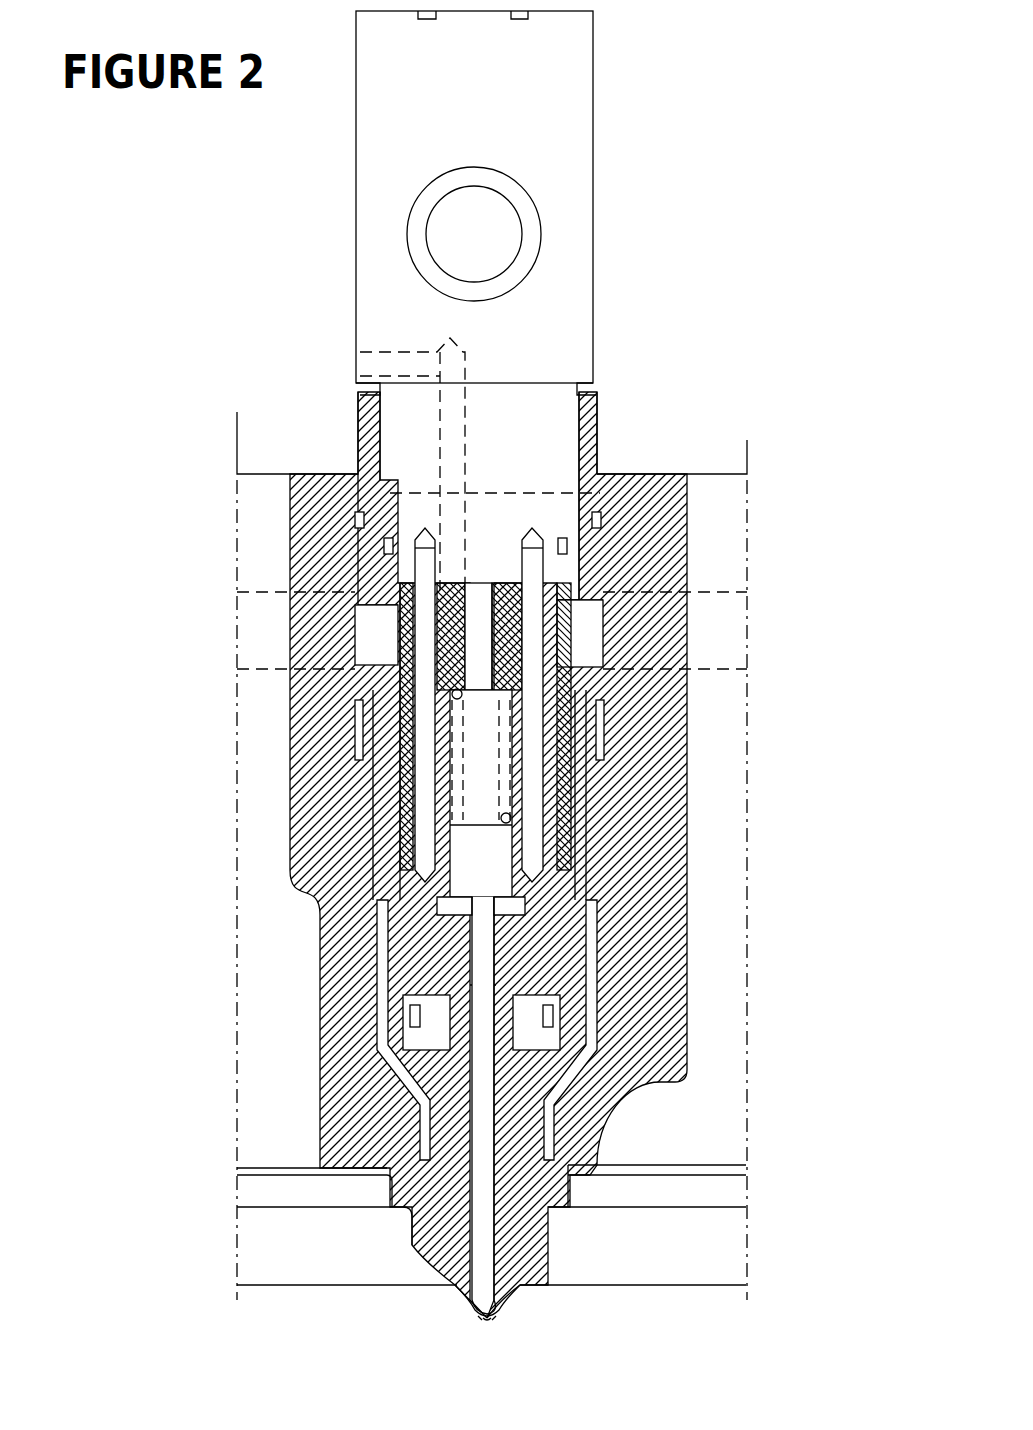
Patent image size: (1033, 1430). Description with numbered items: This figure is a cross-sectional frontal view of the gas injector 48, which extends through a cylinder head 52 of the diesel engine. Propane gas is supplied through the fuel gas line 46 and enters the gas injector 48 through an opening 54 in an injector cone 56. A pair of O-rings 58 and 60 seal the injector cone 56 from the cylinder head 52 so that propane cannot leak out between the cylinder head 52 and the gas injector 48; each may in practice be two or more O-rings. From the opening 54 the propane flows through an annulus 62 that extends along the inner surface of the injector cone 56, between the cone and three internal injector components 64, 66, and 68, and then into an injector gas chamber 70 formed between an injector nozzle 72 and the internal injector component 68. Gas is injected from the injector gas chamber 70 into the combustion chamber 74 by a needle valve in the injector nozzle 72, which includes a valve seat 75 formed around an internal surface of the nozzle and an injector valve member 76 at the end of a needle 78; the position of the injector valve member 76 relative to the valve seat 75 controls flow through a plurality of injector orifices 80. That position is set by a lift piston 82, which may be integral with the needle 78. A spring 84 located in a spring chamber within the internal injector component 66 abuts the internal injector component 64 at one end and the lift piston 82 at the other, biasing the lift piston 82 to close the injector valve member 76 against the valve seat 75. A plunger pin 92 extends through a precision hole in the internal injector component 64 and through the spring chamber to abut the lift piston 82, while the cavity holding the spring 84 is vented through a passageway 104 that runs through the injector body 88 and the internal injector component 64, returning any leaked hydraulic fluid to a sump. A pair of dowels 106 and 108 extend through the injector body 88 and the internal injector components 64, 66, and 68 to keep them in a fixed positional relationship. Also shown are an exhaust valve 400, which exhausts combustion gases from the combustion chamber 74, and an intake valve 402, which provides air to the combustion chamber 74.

The fuel gas line 46 is at (258, 612).
The gas injector 48 is at (706, 108).
The cylinder head 52 is at (722, 515).
The opening 54 is at (375, 612).
The injector cone 56 is at (357, 417).
The O-ring 58 is at (597, 520).
The O-ring 60 is at (605, 737).
The annulus 62 is at (398, 690).
The internal injector component 64 is at (555, 620).
The internal injector component 66 is at (578, 790).
The internal injector component 68 is at (523, 957).
The injector gas chamber 70 is at (382, 1065).
The injector nozzle 72 is at (572, 1070).
The combustion chamber 74 is at (605, 1374).
The valve seat 75 is at (475, 1295).
The injector valve member 76 is at (487, 1322).
The needle 78 is at (415, 1270).
The injector orifices 80 is at (470, 1305).
The lift piston 82 is at (467, 865).
The spring 84 is at (440, 757).
The injector body 88 is at (570, 86).
The plunger pin 92 is at (480, 648).
The passageway 104 is at (445, 398).
The dowel 106 is at (423, 735).
The dowel 108 is at (532, 662).
The exhaust valve 400 is at (302, 1268).
The intake valve 402 is at (636, 1275).